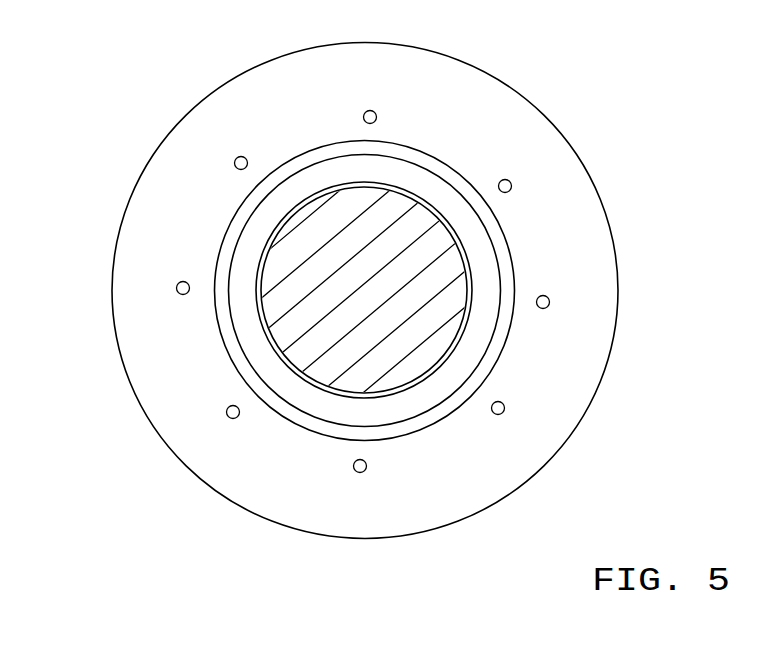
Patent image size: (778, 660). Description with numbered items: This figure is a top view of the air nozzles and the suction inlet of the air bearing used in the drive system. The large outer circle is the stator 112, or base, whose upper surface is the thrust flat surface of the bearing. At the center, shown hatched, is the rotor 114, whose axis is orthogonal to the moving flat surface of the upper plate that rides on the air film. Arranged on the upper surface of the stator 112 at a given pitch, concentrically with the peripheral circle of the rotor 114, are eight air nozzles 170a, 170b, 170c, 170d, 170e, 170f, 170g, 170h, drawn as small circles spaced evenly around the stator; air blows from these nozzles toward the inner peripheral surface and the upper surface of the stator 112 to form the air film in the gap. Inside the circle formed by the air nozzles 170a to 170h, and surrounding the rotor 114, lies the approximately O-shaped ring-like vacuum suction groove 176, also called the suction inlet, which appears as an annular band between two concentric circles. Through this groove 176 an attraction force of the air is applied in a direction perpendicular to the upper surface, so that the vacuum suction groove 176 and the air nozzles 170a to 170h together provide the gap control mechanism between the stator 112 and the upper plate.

The stator 112 is at (538, 112).
The rotor 114 is at (440, 270).
The vacuum suction groove 176 is at (221, 348).
The air nozzle 170a is at (371, 110).
The air nozzle 170b is at (512, 186).
The air nozzle 170c is at (550, 302).
The air nozzle 170d is at (505, 408).
The air nozzle 170e is at (358, 473).
The air nozzle 170f is at (226, 412).
The air nozzle 170g is at (176, 288).
The air nozzle 170h is at (237, 157).